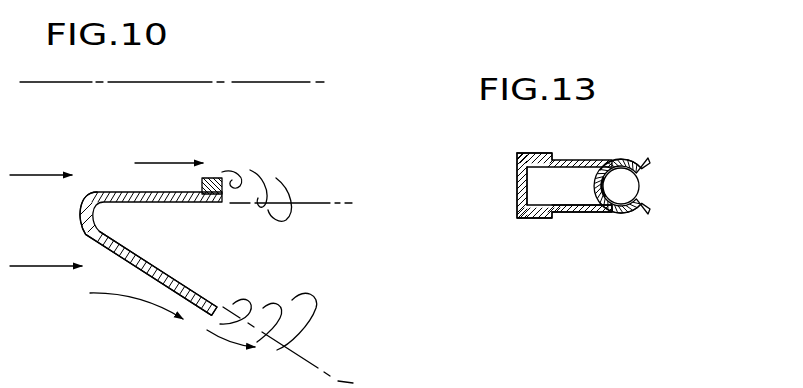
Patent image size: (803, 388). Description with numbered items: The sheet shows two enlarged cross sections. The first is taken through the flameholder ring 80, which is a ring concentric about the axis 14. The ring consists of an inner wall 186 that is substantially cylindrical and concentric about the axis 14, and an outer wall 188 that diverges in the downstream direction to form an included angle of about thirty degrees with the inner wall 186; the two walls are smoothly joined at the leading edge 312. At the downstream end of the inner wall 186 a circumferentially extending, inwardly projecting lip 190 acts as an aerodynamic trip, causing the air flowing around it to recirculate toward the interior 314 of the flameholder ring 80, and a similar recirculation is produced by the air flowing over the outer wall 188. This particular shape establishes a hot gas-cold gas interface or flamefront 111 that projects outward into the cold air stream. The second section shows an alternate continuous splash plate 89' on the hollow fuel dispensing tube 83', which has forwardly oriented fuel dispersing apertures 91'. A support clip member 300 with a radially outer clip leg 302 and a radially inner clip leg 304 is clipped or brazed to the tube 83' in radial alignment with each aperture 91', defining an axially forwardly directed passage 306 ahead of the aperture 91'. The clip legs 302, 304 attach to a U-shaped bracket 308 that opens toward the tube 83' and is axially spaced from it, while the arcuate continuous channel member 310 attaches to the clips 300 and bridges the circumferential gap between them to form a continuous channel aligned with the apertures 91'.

In FIG. 10, the axis 14 is at (273, 82).
In FIG. 10, the flameholder ring 80 is at (108, 185).
In FIG. 10, the inner wall 186 is at (145, 198).
In FIG. 10, the outer wall 188 is at (118, 258).
In FIG. 10, the lip 190 is at (213, 178).
In FIG. 10, the leading edge 312 is at (80, 215).
In FIG. 10, the interior 314 is at (227, 252).
In FIG. 10, the flamefront 111 is at (327, 367).
In FIG. 13, the continuous splash plate 89' is at (571, 169).
In FIG. 13, the fuel dispersing apertures 91' is at (582, 225).
In FIG. 13, the support clip member 300 is at (637, 151).
In FIG. 13, the radially outer clip leg 302 is at (641, 164).
In FIG. 13, the radially inner clip leg 304 is at (623, 216).
In FIG. 13, the passage 306 is at (558, 185).
In FIG. 13, the U-shaped bracket 308 is at (517, 209).
In FIG. 13, the continuous channel member 310 is at (522, 153).
In FIG. 13, the hollow fuel dispensing tube 83' is at (660, 186).